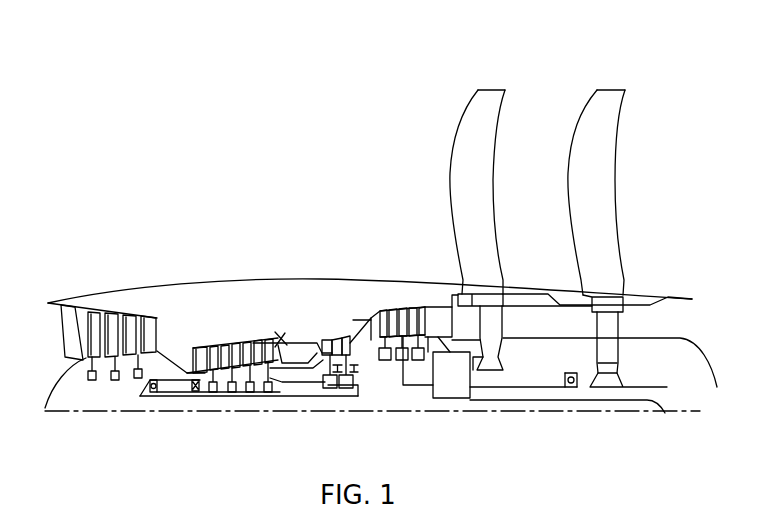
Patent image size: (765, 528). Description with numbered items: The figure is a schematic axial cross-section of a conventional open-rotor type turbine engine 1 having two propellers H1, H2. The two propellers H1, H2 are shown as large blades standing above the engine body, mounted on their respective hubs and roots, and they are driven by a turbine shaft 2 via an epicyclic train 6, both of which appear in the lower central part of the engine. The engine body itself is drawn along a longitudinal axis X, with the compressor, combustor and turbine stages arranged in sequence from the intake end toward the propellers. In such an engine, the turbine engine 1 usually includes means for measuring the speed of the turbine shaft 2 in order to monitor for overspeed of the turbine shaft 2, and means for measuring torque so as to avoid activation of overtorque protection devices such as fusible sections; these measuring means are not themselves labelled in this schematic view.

The open-rotor turbine engine 1 is at (177, 256).
The turbine shaft 2 is at (418, 387).
The epicyclic train 6 is at (447, 388).
The first propeller H1 is at (490, 98).
The second propeller H2 is at (608, 98).
The longitudinal axis of the turbomachine X is at (376, 401).